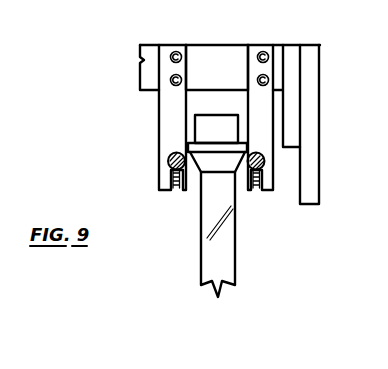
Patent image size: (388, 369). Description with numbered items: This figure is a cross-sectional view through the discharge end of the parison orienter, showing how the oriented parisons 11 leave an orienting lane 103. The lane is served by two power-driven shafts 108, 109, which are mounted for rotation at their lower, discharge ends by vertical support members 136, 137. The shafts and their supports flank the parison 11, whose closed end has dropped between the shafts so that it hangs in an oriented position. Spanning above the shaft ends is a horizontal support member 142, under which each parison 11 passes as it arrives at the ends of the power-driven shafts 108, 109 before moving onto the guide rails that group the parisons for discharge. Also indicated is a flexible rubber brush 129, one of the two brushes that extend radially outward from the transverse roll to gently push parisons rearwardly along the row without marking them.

The parison 11 is at (238, 245).
The power-driven shaft 108 is at (168, 160).
The power-driven shaft 109 is at (265, 162).
The support member 136 is at (265, 108).
The support member 137 is at (160, 137).
The horizontal support member 142 is at (206, 52).
The orienting lane 103 is at (84, 6).
The flexible rubber brush 129 is at (280, 5).